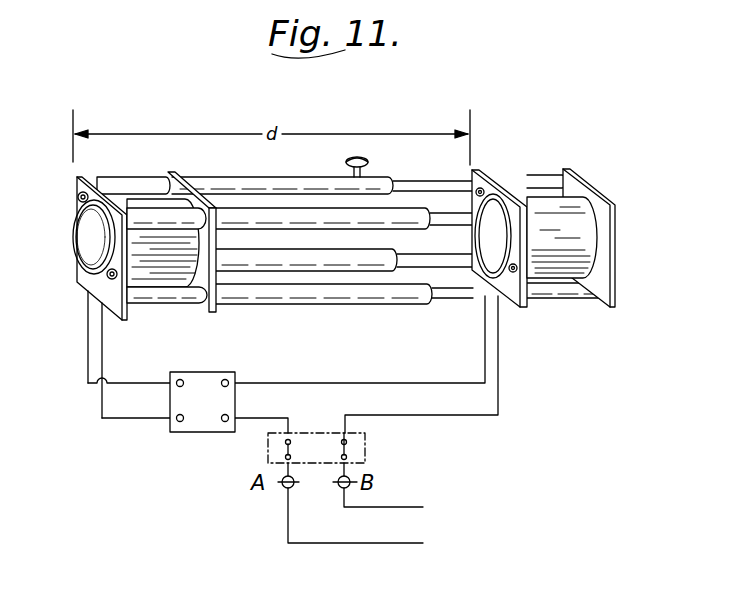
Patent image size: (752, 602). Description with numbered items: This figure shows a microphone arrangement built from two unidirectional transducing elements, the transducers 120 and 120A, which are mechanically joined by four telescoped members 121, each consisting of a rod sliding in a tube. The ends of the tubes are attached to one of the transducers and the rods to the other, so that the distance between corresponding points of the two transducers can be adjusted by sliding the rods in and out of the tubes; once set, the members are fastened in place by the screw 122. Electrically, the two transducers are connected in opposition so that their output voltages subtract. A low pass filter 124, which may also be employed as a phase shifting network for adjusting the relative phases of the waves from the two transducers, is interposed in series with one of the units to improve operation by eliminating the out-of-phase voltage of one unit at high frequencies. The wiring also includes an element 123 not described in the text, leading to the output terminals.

The transducer 120 is at (97, 240).
The transducer 120A is at (585, 240).
The telescoped members 121 is at (301, 152).
The screw 122 is at (369, 161).
The switch 123 is at (365, 450).
The low pass filter 124 is at (236, 468).